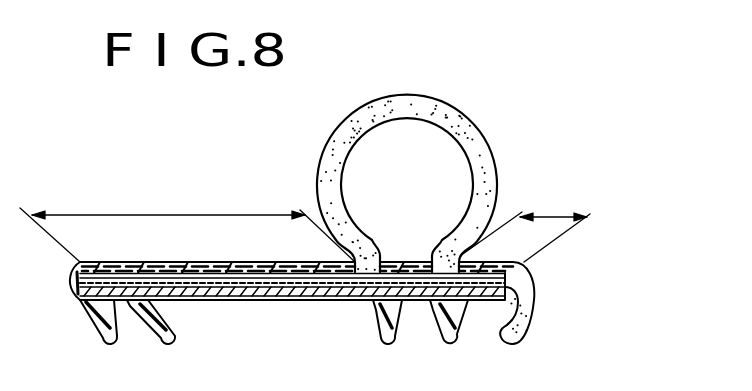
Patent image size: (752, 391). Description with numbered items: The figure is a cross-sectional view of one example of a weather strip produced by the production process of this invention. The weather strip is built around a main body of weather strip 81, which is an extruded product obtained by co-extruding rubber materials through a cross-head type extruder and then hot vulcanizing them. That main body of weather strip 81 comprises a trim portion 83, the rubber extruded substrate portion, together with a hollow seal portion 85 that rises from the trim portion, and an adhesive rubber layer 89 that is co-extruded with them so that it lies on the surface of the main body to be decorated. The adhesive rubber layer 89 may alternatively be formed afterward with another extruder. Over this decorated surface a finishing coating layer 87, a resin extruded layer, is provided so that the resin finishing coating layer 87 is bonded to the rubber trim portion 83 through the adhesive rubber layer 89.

The main body of weather strip 81 is at (372, 58).
The trim portion 83 is at (317, 290).
The hollow seal portion 85 is at (486, 140).
The finishing coating layer 87 is at (253, 262).
The adhesive rubber layer 89 is at (210, 276).